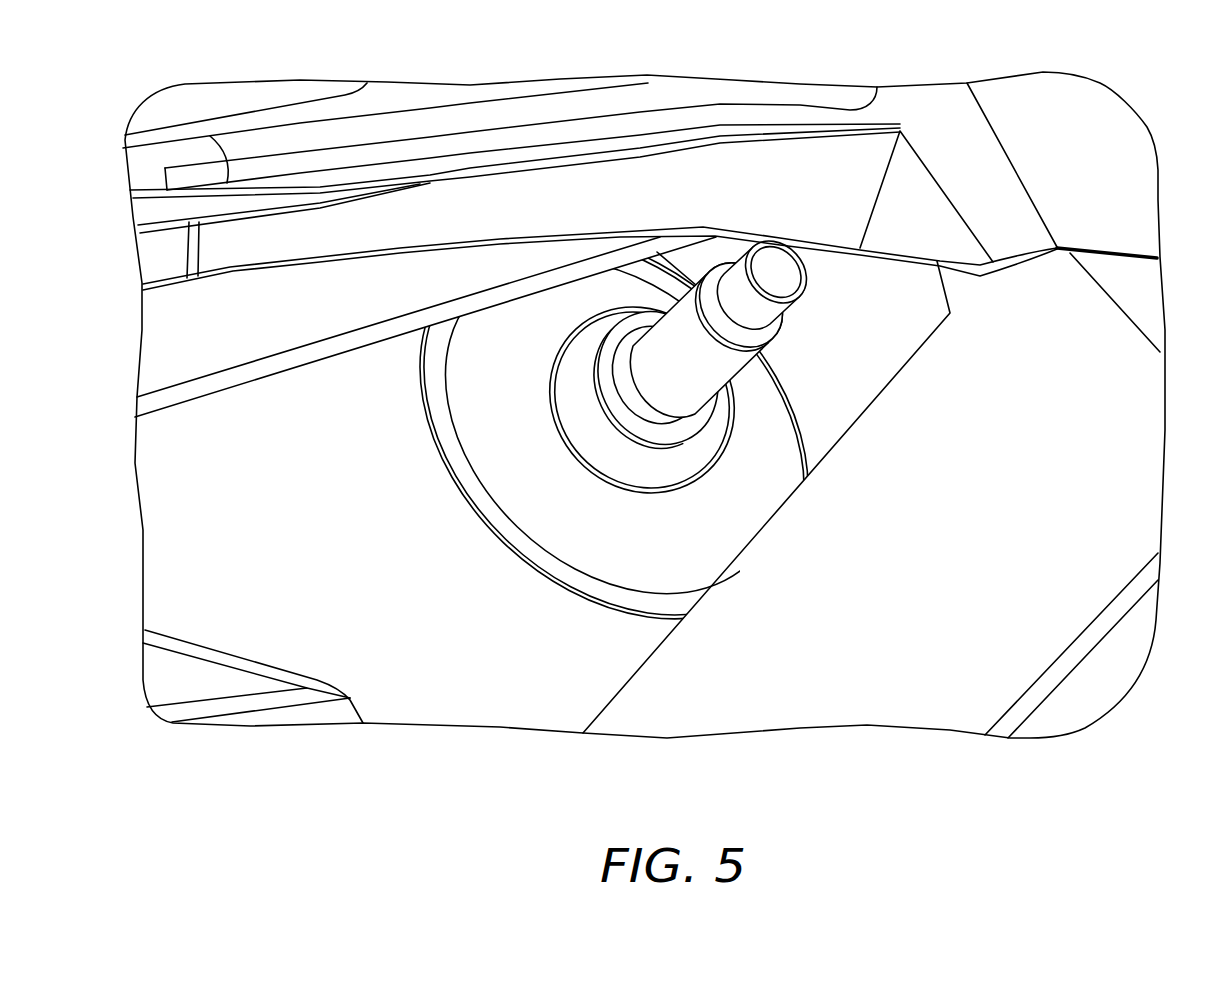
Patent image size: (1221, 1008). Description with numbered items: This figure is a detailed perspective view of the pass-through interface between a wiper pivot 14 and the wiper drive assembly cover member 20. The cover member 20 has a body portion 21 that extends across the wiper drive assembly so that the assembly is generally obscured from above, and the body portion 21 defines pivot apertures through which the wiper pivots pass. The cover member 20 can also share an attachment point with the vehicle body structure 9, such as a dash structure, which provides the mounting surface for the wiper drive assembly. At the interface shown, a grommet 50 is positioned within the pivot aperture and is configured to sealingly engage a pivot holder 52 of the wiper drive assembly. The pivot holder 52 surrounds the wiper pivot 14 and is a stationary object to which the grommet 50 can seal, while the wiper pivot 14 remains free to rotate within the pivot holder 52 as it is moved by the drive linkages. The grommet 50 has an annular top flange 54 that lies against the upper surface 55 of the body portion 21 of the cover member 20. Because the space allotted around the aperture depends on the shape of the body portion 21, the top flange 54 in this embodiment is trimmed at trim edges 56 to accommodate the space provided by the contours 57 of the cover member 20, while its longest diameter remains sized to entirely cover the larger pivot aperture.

The vehicle body structure 9 is at (385, 97).
The wiper pivot 14 is at (793, 287).
The wiper drive assembly cover member 20 is at (156, 494).
The body portion 21 is at (1145, 432).
The grommet 50 is at (380, 406).
The pivot holder 52 is at (581, 393).
The top flange 54 is at (570, 540).
The upper surface 55 is at (400, 510).
The trim edge 56 is at (469, 306).
The contour 57 is at (360, 328).